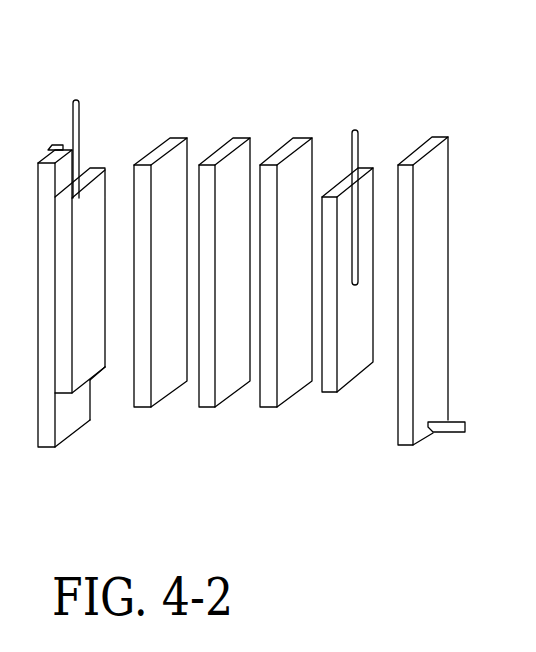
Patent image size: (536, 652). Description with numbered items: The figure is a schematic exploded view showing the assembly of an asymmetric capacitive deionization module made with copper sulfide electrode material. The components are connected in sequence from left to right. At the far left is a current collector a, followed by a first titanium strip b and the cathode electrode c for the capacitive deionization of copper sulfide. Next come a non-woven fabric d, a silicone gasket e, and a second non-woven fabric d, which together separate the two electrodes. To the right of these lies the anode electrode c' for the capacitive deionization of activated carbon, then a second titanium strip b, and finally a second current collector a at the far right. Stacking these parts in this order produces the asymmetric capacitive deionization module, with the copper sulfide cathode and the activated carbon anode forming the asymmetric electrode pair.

The current collector a is at (48, 447).
The titanium strip b is at (73, 100).
The cathode electrode c is at (81, 301).
The anode electrode c' is at (347, 329).
The non-woven fabric d is at (142, 410).
The silicone gasket e is at (205, 408).